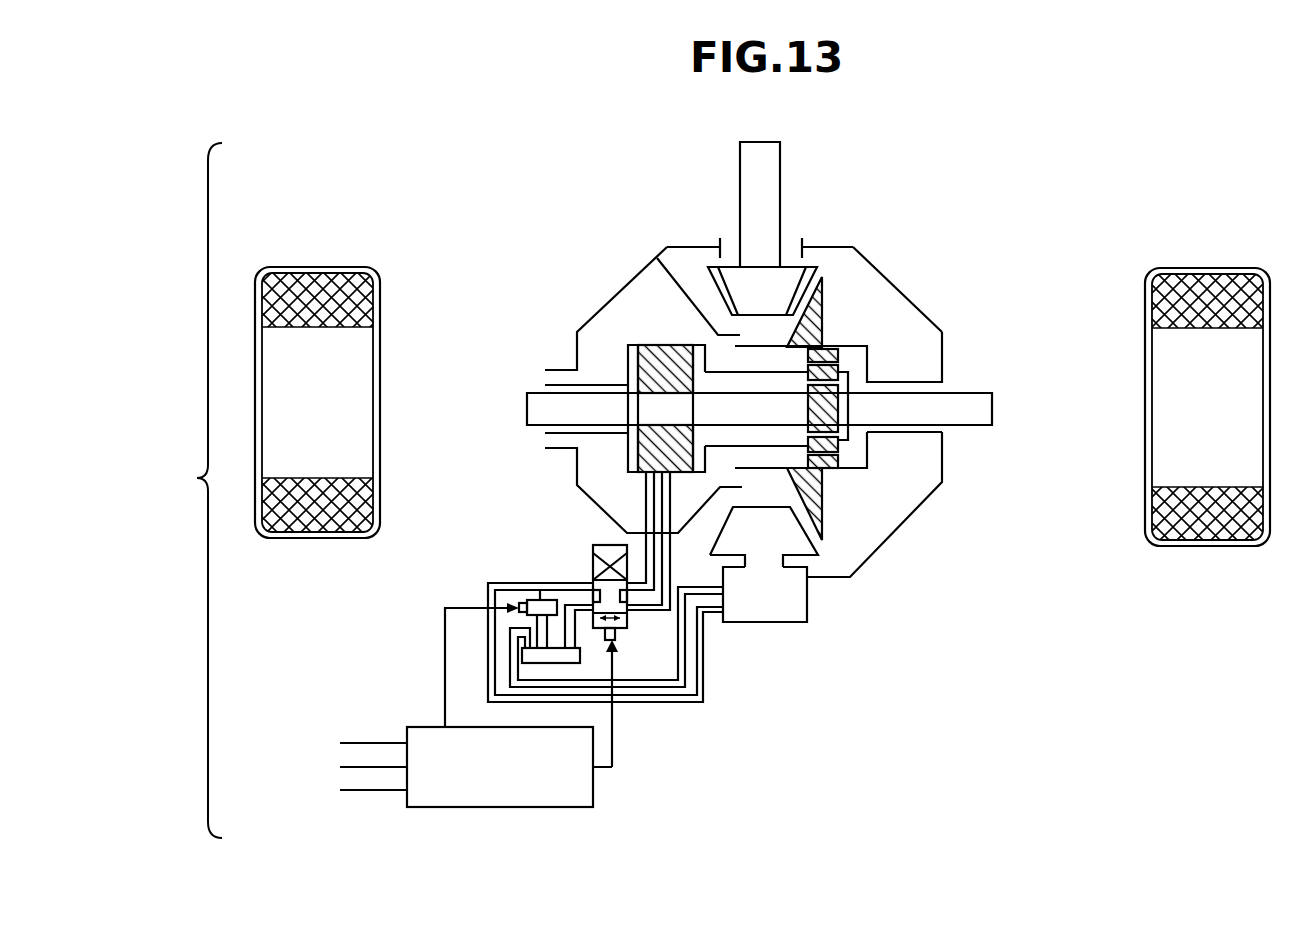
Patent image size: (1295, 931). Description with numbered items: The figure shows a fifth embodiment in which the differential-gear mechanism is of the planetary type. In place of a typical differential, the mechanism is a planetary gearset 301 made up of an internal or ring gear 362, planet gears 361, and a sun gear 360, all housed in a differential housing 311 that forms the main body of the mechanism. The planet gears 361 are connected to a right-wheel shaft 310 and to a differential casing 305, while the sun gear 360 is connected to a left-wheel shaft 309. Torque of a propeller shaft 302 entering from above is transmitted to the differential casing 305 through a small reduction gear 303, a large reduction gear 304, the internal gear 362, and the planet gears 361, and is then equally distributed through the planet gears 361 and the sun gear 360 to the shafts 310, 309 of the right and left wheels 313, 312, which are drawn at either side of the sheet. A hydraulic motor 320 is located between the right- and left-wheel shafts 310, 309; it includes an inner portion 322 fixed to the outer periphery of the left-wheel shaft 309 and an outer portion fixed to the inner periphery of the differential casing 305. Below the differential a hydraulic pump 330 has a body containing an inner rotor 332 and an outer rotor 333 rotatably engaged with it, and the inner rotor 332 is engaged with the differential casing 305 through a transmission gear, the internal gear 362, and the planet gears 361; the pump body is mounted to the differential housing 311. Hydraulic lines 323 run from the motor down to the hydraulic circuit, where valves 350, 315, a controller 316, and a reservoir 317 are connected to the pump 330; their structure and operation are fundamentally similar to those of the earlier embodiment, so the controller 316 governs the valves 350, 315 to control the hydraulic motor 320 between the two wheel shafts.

The planetary gearset 301 is at (872, 243).
The propeller shaft 302 is at (770, 163).
The small reduction gear 303 is at (785, 285).
The large reduction gear 304 is at (808, 322).
The differential casing 305 is at (632, 345).
The left-wheel shaft 309 is at (537, 402).
The right-wheel shaft 310 is at (982, 415).
The differential housing 311 is at (887, 273).
The left wheel 312 is at (328, 283).
The right wheel 313 is at (1237, 282).
The valve 315 is at (537, 602).
The controller 316 is at (520, 807).
The reservoir 317 is at (522, 657).
The hydraulic motor 320 is at (660, 318).
The inner portion 322 is at (660, 438).
The hydraulic lines 323 is at (652, 475).
The hydraulic pump 330 is at (828, 598).
The inner rotor 332 is at (823, 508).
The outer rotor 333 is at (775, 622).
The valve 350 is at (632, 620).
The sun gear 360 is at (847, 433).
The planet gears 361 is at (838, 373).
The internal gear 362 is at (838, 347).